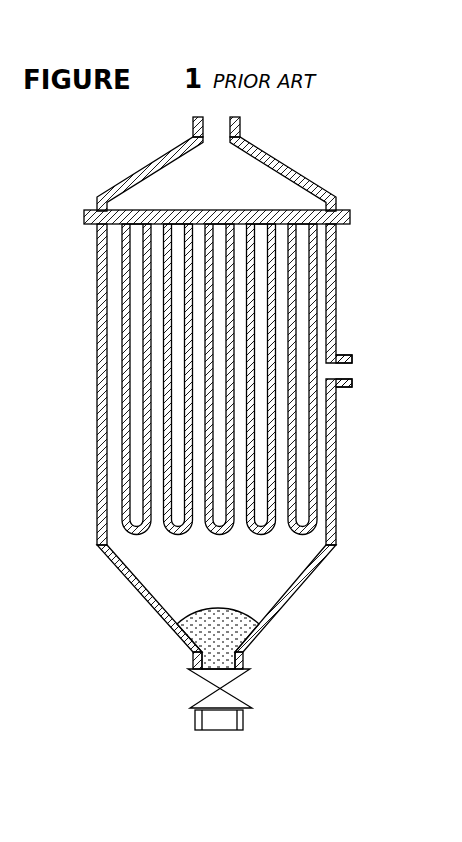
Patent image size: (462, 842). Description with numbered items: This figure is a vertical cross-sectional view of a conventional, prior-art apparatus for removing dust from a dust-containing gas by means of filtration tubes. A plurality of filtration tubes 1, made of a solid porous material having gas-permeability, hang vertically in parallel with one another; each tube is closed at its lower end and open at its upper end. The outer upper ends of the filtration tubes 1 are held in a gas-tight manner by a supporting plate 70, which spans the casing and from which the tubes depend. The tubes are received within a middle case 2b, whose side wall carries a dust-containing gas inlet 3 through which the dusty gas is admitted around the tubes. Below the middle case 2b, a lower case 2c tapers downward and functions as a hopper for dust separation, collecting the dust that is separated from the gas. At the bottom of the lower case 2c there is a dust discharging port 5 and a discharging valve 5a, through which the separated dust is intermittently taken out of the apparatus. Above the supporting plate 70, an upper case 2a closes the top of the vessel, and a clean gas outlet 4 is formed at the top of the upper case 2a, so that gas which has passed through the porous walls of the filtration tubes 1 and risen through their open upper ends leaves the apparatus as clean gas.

The filtration tubes 1 is at (317, 273).
The upper case 2a is at (287, 168).
The middle case 2b is at (334, 317).
The lower case 2c is at (303, 588).
The dust-containing gas inlet 3 is at (345, 372).
The clean gas outlet 4 is at (240, 128).
The dust discharging port 5 is at (243, 660).
The discharging valve 5a is at (243, 700).
The supporting plate 70 is at (283, 217).